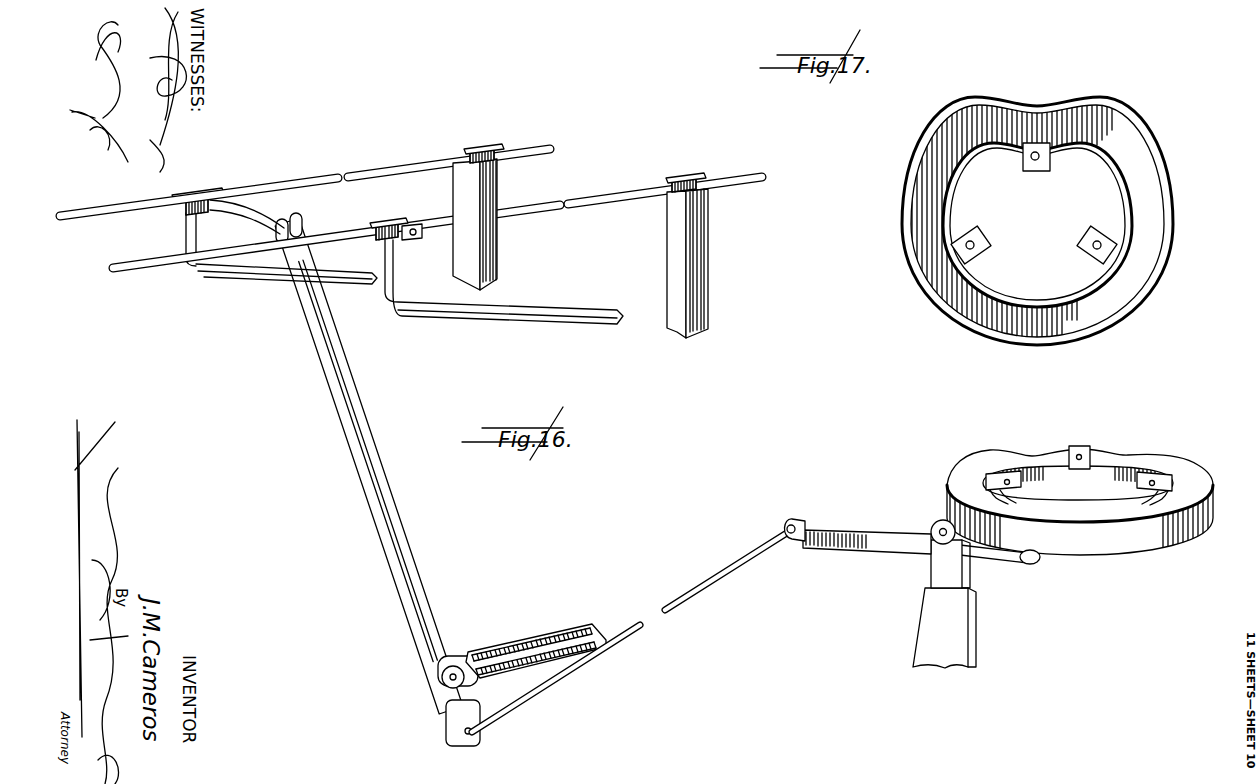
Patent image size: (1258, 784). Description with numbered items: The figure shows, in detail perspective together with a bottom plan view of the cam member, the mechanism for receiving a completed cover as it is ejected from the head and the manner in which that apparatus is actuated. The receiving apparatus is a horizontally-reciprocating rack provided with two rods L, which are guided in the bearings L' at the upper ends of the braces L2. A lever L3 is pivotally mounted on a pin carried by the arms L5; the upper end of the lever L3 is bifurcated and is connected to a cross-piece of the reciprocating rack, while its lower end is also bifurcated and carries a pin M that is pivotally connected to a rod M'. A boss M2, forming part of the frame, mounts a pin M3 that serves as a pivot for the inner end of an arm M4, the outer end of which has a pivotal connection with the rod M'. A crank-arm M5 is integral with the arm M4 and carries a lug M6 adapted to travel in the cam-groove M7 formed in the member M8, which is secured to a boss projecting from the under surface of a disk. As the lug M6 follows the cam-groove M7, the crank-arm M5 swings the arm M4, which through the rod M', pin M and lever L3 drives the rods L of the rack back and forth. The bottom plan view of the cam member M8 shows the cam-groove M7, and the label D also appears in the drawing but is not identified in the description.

In FIG. 16, the rods L is at (411, 233).
In FIG. 16, the bearings L' is at (539, 229).
In FIG. 16, the braces L2 is at (413, 327).
In FIG. 16, the lever L3 is at (388, 539).
In FIG. 16, the arms L5 is at (520, 640).
In FIG. 16, the pin M is at (483, 725).
In FIG. 16, the rod M' is at (631, 631).
In FIG. 16, the boss M2 is at (940, 620).
In FIG. 16, the pin M3 is at (940, 530).
In FIG. 16, the arm M4 is at (893, 553).
In FIG. 16, the crank-arm M5 is at (987, 557).
In FIG. 16, the lug M6 is at (1047, 557).
In FIG. 17, the cam-groove M7 is at (1148, 236).
In FIG. 16, the cam member M8 is at (1193, 473).
In FIG. 17, the cam member M8 is at (922, 276).
In FIG. 16, the ring D is at (1105, 547).